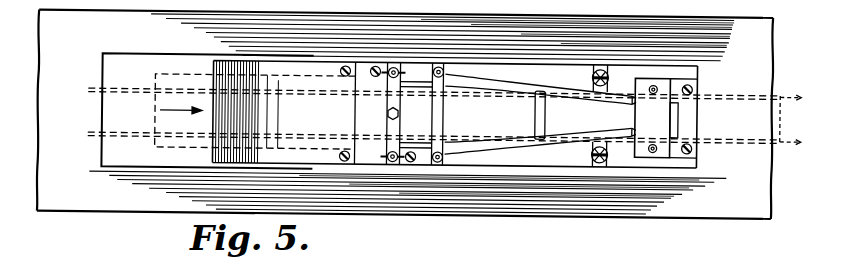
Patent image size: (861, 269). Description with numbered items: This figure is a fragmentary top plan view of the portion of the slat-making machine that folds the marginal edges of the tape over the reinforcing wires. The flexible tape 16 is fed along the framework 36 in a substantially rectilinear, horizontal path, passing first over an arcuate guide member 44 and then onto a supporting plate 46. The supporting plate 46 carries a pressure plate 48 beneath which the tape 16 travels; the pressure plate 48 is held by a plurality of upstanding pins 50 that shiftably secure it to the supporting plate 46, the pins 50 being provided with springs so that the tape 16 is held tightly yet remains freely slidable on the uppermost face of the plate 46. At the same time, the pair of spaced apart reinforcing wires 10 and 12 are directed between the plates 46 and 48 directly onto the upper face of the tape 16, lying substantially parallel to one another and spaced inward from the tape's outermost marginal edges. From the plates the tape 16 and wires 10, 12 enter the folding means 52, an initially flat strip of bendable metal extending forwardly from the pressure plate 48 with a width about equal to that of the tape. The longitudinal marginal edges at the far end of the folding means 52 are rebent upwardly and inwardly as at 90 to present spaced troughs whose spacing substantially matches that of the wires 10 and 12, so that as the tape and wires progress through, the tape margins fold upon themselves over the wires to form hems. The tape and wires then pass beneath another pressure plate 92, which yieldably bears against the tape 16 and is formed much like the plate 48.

The reinforcing member 10 is at (118, 140).
The reinforcing member 12 is at (118, 96).
The tape 16 is at (178, 152).
The framework 36 is at (405, 125).
The arcuate guide member 44 is at (335, 165).
The supporting plate 46 is at (497, 160).
The pressure plate 48 is at (417, 105).
The upstanding pins 50 is at (393, 68).
The folding means 52 is at (572, 125).
The rebent marginal edge portions 90 is at (627, 130).
The pressure plate 92 is at (668, 156).